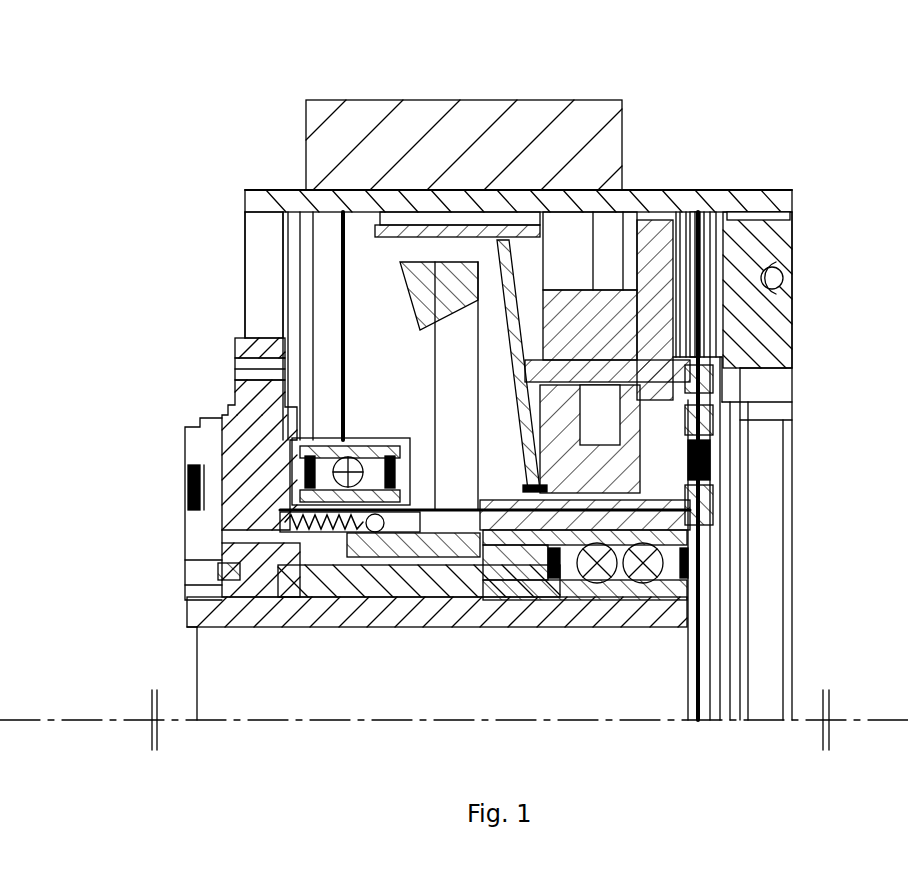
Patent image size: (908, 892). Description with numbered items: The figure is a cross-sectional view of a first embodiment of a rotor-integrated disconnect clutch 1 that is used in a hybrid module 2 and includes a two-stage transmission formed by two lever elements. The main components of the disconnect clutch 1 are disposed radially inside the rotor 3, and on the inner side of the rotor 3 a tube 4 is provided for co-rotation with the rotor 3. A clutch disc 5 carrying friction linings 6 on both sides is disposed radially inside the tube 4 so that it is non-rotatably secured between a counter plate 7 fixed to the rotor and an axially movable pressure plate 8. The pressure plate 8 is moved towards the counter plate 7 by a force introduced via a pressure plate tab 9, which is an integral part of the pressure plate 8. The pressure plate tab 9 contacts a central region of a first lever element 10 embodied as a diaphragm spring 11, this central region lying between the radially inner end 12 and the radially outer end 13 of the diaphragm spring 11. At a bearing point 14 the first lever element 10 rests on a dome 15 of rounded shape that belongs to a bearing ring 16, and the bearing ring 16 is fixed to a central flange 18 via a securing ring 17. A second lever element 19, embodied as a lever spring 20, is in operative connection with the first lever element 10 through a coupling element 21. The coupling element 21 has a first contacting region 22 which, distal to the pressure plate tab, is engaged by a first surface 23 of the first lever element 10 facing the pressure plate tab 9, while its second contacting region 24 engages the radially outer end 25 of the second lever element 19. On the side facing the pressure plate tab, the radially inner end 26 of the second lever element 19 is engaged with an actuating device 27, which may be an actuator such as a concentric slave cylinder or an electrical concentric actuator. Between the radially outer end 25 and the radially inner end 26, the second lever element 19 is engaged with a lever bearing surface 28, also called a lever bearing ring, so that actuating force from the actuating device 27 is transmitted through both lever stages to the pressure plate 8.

The rotor-integrated disconnect clutch 1 is at (758, 108).
The hybrid module 2 is at (540, 377).
The rotor 3 is at (600, 130).
The tube 4 is at (765, 197).
The clutch disc 5 is at (712, 214).
The friction linings 6 is at (694, 214).
The counter plate 7 is at (770, 250).
The pressure plate 8 is at (786, 283).
The pressure plate tab 9 is at (793, 370).
The first lever element 10 is at (750, 432).
The diaphragm spring 11 is at (796, 466).
The radially inner end 12 is at (560, 460).
The radially outer end 13 is at (462, 255).
The bearing point 14 is at (560, 480).
The dome 15 is at (600, 520).
The bearing ring 16 is at (590, 500).
The securing ring 17 is at (700, 585).
The central flange 18 is at (705, 612).
The second lever element 19 is at (335, 290).
The lever spring 20 is at (234, 439).
The coupling element 21 is at (362, 225).
The first contacting region 22 is at (505, 240).
The first surface 23 is at (570, 255).
The second contacting region 24 is at (345, 245).
The radially outer end 25 is at (345, 205).
The radially inner end 26 is at (235, 430).
The actuating device 27 is at (285, 488).
The lever bearing surface 28 is at (425, 238).